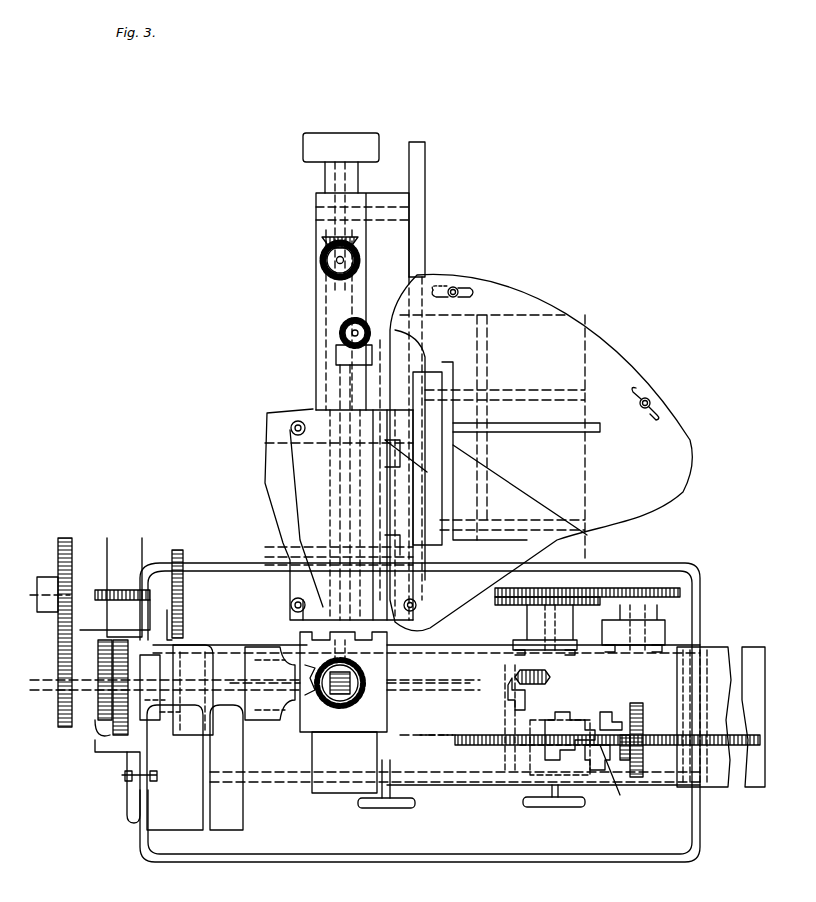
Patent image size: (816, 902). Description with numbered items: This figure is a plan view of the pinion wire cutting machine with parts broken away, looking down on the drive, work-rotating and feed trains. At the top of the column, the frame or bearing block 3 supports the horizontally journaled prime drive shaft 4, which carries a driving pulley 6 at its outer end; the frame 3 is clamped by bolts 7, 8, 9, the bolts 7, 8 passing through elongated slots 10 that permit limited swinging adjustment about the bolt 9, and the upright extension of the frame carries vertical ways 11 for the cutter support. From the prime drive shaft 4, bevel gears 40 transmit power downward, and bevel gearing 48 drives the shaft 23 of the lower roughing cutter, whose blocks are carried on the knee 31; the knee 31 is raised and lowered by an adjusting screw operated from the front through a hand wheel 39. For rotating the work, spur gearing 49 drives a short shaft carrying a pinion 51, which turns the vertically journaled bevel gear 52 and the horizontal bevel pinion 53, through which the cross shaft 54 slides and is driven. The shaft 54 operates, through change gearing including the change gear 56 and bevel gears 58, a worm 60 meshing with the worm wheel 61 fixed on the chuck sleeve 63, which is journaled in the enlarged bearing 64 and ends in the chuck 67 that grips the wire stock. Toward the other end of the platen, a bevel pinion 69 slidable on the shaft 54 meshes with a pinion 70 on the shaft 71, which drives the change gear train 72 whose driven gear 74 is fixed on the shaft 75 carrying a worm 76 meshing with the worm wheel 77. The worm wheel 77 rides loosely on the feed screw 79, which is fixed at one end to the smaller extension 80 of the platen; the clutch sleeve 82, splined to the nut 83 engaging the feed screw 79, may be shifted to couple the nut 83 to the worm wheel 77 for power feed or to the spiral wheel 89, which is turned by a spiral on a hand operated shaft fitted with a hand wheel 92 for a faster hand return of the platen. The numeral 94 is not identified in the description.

The frame or bearing block 3 is at (603, 523).
The prime drive shaft 4 is at (336, 288).
The driving pulley 6 is at (303, 138).
The bolt 7 is at (458, 288).
The bolt 8 is at (652, 401).
The bolt 9 is at (360, 517).
The elongated slots 10 is at (470, 297).
The vertical ways 11 is at (427, 472).
The shaft 23 is at (360, 380).
The knee 31 is at (267, 462).
The hand wheel 39 is at (386, 808).
The bevel gears 40 is at (358, 249).
The bevel gearing 48 is at (370, 348).
The spur gearing 49 is at (183, 612).
The pinion 51 is at (383, 672).
The bevel gear 52 is at (346, 689).
The bevel pinion 53 is at (299, 693).
The shaft 54 is at (437, 688).
The change gear 56 is at (58, 630).
The bevel gears 58 is at (110, 596).
The worm 60 is at (98, 718).
The worm wheel 61 is at (118, 735).
The chuck sleeve 63 is at (152, 672).
The enlarged bearing 64 is at (195, 647).
The chuck 67 is at (273, 647).
The bevel pinion 69 is at (515, 697).
The pinion 70 is at (550, 677).
The shaft 71 is at (560, 622).
The change gear train 72 is at (585, 592).
The driven change gear 74 is at (665, 592).
The shaft 75 is at (652, 615).
The worm 76 is at (643, 750).
The worm wheel 77 is at (643, 708).
The feed screw 79 is at (607, 717).
The extension 80 is at (754, 717).
The clutch sleeve 82 is at (611, 714).
The nut 83 is at (611, 775).
The spiral wheel 89 is at (553, 722).
The hand wheel 92 is at (536, 807).
The shaft 94 is at (554, 754).